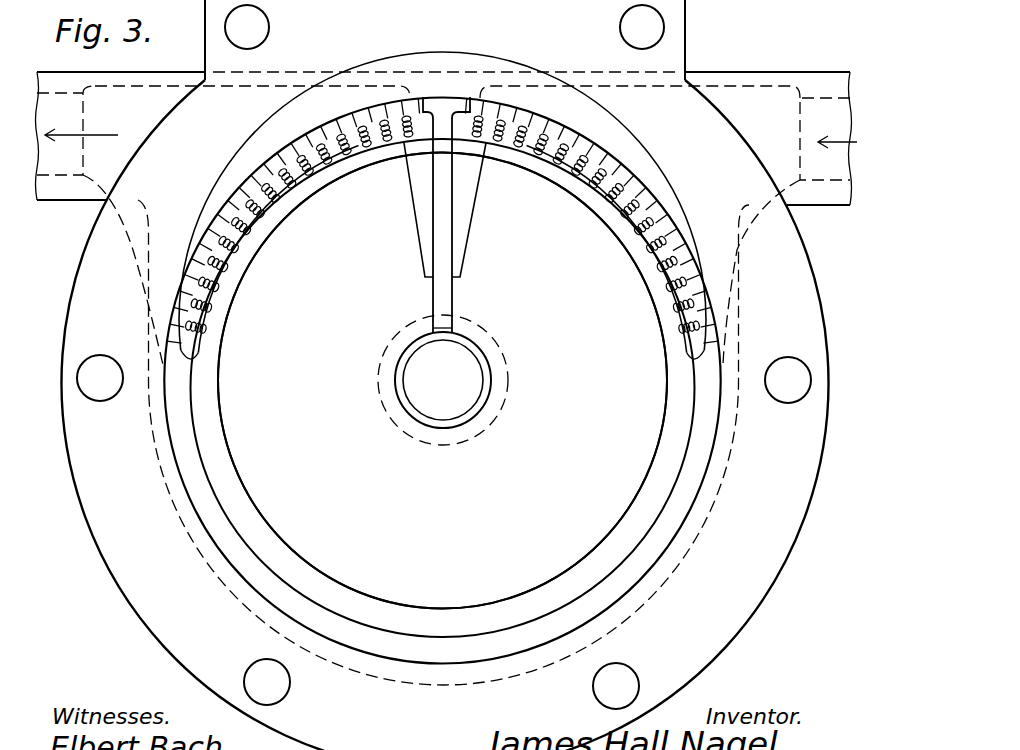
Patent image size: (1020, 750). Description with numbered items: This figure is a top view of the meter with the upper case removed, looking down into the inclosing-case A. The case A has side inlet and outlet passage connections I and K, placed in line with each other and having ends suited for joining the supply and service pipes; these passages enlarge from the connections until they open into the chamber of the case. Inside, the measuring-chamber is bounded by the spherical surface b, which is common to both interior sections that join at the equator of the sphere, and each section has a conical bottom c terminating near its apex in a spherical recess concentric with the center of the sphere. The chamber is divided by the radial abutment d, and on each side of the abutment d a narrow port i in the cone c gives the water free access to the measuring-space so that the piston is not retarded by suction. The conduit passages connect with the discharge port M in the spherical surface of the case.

The inclosing-case A is at (445, 375).
The outlet passage connection K is at (121, 136).
The inlet passage connection I is at (771, 138).
The spherical surface b is at (443, 388).
The conical bottom c is at (442, 381).
The discharge port M is at (442, 357).
The radial abutment d is at (446, 215).
The narrow port i is at (445, 210).